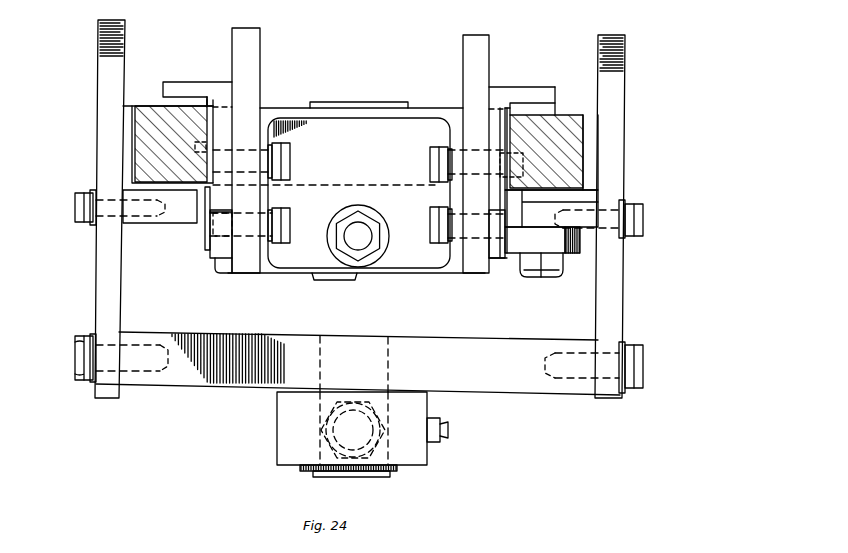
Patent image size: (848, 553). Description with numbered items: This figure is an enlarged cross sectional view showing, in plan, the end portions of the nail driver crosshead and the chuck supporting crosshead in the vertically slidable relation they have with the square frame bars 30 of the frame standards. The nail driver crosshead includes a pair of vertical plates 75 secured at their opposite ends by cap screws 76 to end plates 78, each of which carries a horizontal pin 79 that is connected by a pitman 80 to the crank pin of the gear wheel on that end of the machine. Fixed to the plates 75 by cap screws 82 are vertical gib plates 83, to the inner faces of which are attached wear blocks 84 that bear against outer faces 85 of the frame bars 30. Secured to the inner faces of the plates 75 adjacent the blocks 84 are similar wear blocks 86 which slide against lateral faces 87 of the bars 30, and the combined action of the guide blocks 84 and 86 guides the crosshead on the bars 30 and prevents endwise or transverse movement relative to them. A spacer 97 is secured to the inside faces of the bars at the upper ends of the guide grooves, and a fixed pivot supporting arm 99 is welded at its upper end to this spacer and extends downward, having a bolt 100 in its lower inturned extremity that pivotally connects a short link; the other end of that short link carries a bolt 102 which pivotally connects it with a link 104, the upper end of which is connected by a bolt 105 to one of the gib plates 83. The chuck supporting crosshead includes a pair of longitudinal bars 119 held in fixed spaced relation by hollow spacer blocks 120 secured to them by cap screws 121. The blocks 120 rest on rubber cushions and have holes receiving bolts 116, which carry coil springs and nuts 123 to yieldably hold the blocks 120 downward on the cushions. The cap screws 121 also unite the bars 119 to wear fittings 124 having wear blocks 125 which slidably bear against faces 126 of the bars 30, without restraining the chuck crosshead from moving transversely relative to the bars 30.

The frame bars 30 is at (138, 114).
The vertical plates 75 is at (103, 290).
The cap screws 76 is at (78, 358).
The end plates 78 is at (216, 385).
The horizontal pin 79 is at (398, 472).
The pitman 80 is at (278, 453).
The cap screws 82 is at (78, 207).
The vertical plates 83 is at (584, 230).
The wear blocks 84 is at (122, 192).
The outer faces 85 is at (125, 181).
The wear blocks 86 is at (128, 144).
The lateral faces 87 is at (135, 126).
The spacer 97 is at (207, 122).
The fixed pivot supporting arm 99 is at (209, 206).
The bolt 100 is at (336, 277).
The bolt 102 is at (219, 268).
The link 104 is at (205, 233).
The bolt 105 is at (544, 270).
The bolt 116 is at (355, 228).
The longitudinal bars 119 is at (252, 46).
The hollow spacer blocks 120 is at (397, 272).
The cap screws 121 is at (283, 163).
The nuts 123 is at (372, 242).
The wear fittings 124 is at (227, 93).
The wear blocks 125 is at (198, 100).
The faces 126 is at (140, 110).